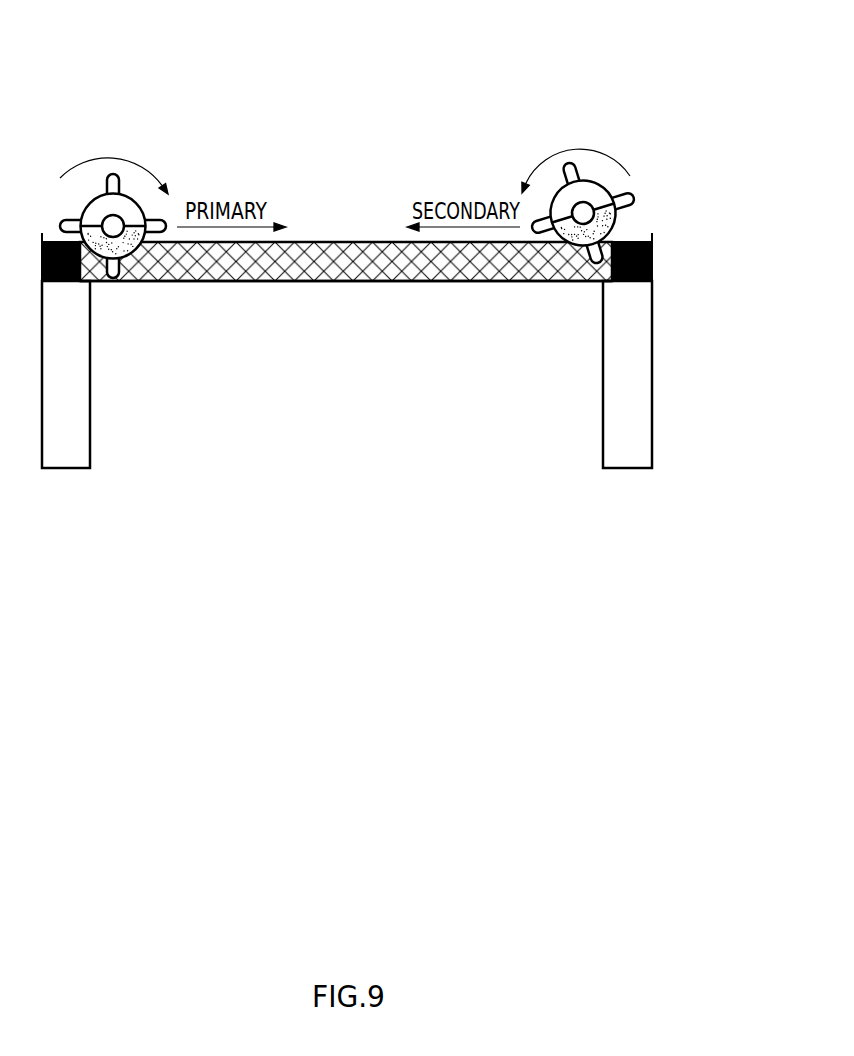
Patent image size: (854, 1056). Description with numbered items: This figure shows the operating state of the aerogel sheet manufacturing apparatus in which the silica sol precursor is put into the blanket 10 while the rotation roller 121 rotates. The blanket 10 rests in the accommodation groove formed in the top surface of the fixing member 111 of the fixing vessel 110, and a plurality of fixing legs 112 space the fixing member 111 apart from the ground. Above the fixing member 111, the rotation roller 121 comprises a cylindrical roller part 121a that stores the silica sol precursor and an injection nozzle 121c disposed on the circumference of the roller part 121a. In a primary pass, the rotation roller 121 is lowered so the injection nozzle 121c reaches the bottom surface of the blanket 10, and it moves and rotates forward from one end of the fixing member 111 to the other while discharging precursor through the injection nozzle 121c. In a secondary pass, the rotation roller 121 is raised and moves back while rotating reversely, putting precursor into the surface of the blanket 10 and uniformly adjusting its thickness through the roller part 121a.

The blanket 10 is at (353, 258).
The fixing vessel 110 is at (347, 350).
The fixing member 111 is at (145, 283).
The fixing legs 112 is at (90, 409).
The rotation roller 121 is at (106, 170).
The roller part 121a is at (128, 108).
The injection nozzle 121c is at (113, 174).